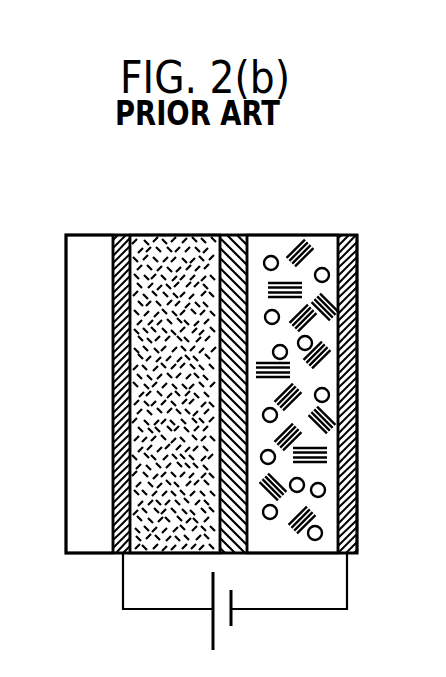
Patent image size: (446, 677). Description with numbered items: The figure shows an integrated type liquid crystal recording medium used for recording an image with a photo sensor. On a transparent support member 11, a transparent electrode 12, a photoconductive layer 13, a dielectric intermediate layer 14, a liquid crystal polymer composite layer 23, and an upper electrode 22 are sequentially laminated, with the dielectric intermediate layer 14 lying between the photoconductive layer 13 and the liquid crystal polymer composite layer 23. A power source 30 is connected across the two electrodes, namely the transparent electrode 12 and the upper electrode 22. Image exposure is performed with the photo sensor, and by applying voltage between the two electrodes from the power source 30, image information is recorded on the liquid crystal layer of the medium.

The transparent support member 11 is at (82, 243).
The transparent electrode 12 is at (117, 243).
The photoconductive layer 13 is at (172, 243).
The dielectric intermediate layer 14 is at (235, 243).
The liquid crystal polymer composite layer 23 is at (285, 243).
The upper electrode 22 is at (348, 243).
The power source 30 is at (235, 606).